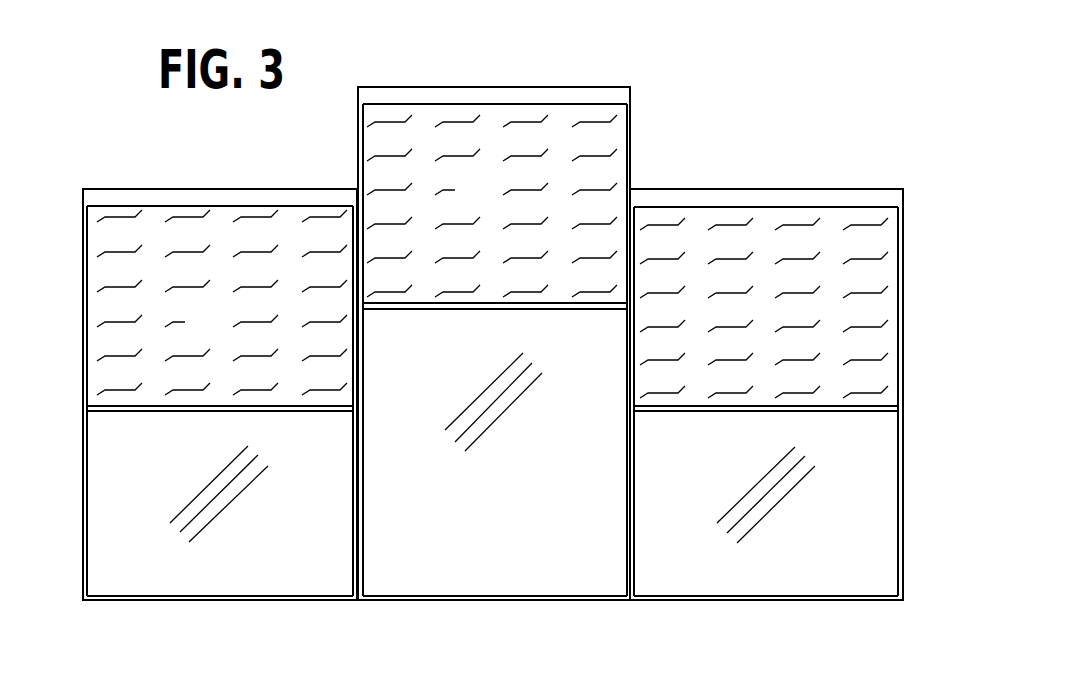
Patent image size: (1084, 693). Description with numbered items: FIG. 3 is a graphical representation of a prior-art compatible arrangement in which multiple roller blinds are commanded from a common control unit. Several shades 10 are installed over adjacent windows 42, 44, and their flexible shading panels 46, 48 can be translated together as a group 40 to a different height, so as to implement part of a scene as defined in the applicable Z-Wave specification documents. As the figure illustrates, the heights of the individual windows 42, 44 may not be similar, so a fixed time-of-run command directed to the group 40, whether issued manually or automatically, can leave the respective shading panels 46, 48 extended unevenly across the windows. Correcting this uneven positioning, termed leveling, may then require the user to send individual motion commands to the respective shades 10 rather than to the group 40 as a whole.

The shade 10 is at (281, 189).
The group 40 is at (493, 385).
The window 42 is at (188, 468).
The window 44 is at (507, 488).
The flexible shading panel 46 is at (223, 328).
The flexible shading panel 48 is at (492, 202).